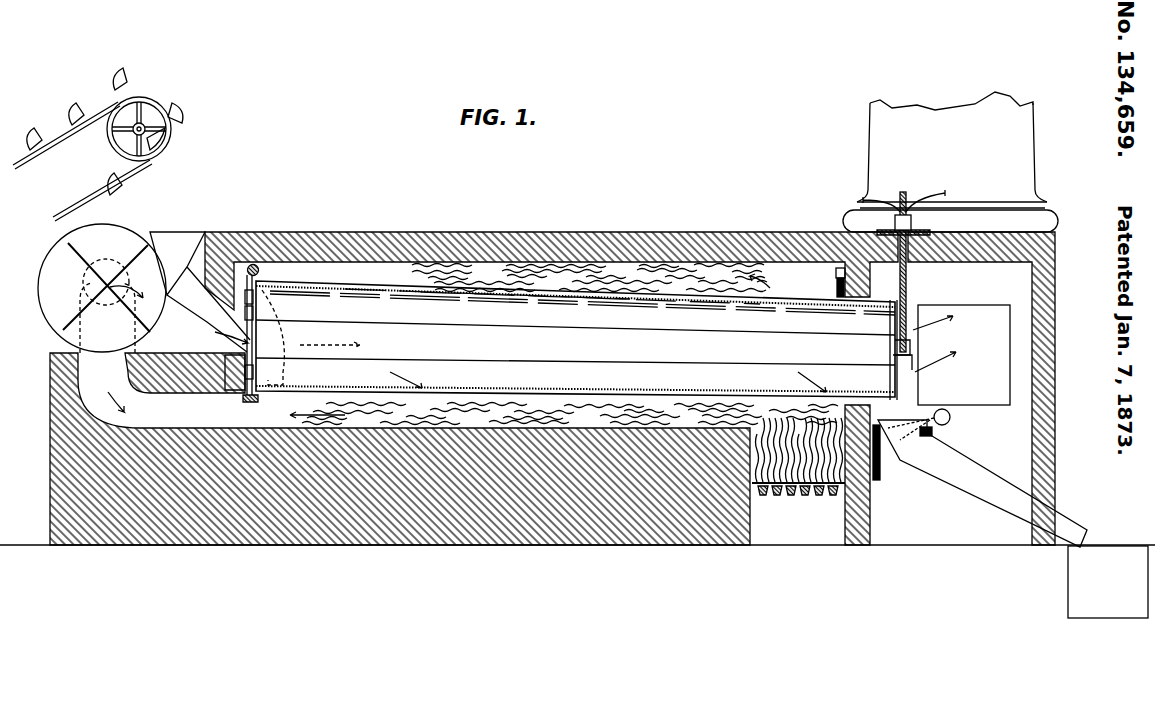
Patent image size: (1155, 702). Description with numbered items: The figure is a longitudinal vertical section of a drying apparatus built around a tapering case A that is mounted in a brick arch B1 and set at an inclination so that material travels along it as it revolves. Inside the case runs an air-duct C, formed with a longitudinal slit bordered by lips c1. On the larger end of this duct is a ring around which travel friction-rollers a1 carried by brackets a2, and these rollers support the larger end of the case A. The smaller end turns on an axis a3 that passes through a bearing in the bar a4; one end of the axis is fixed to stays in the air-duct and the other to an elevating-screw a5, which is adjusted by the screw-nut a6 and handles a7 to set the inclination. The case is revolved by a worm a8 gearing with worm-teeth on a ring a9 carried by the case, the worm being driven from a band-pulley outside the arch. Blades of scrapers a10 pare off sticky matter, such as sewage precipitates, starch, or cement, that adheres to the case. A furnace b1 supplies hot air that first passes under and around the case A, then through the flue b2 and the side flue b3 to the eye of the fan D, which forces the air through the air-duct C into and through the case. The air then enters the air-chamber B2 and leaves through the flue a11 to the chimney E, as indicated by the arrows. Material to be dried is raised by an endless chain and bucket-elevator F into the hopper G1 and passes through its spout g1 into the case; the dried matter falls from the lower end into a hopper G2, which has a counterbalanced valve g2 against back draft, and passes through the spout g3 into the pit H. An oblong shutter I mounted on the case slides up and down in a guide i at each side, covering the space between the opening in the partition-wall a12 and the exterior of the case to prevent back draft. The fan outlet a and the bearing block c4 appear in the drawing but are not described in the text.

The endless chain and bucket-elevator F is at (98, 144).
The fan D is at (102, 288).
The fan outlet a is at (111, 306).
The hopper G1 is at (177, 263).
The spout g1 is at (208, 309).
The brick arch B1 is at (551, 271).
The air-chamber B2 is at (950, 388).
The furnace b1 is at (573, 449).
The flue b2 is at (400, 449).
The side flue b3 is at (172, 382).
The bearing block c4 is at (235, 372).
The tapering case A is at (575, 339).
The blades of scrapers a10 is at (552, 300).
The air-duct C is at (575, 335).
The lips c1 is at (575, 375).
The worm a8 is at (259, 328).
The brackets a2 is at (256, 297).
The friction-rollers a1 is at (258, 340).
The ring a9 is at (250, 406).
The bar a4 is at (888, 350).
The axis a3 is at (902, 372).
The elevating-screw a5 is at (911, 272).
The flue a11 is at (961, 355).
The partition-wall a12 is at (857, 271).
The oblong shutter I is at (836, 287).
The guide i is at (836, 273).
The chimney E is at (950, 162).
The handles a7 is at (904, 194).
The screw-nut a6 is at (903, 225).
The spout g3 is at (982, 483).
The counterbalanced valve g2 is at (919, 420).
The hopper G2 is at (912, 440).
The pit H is at (1108, 582).